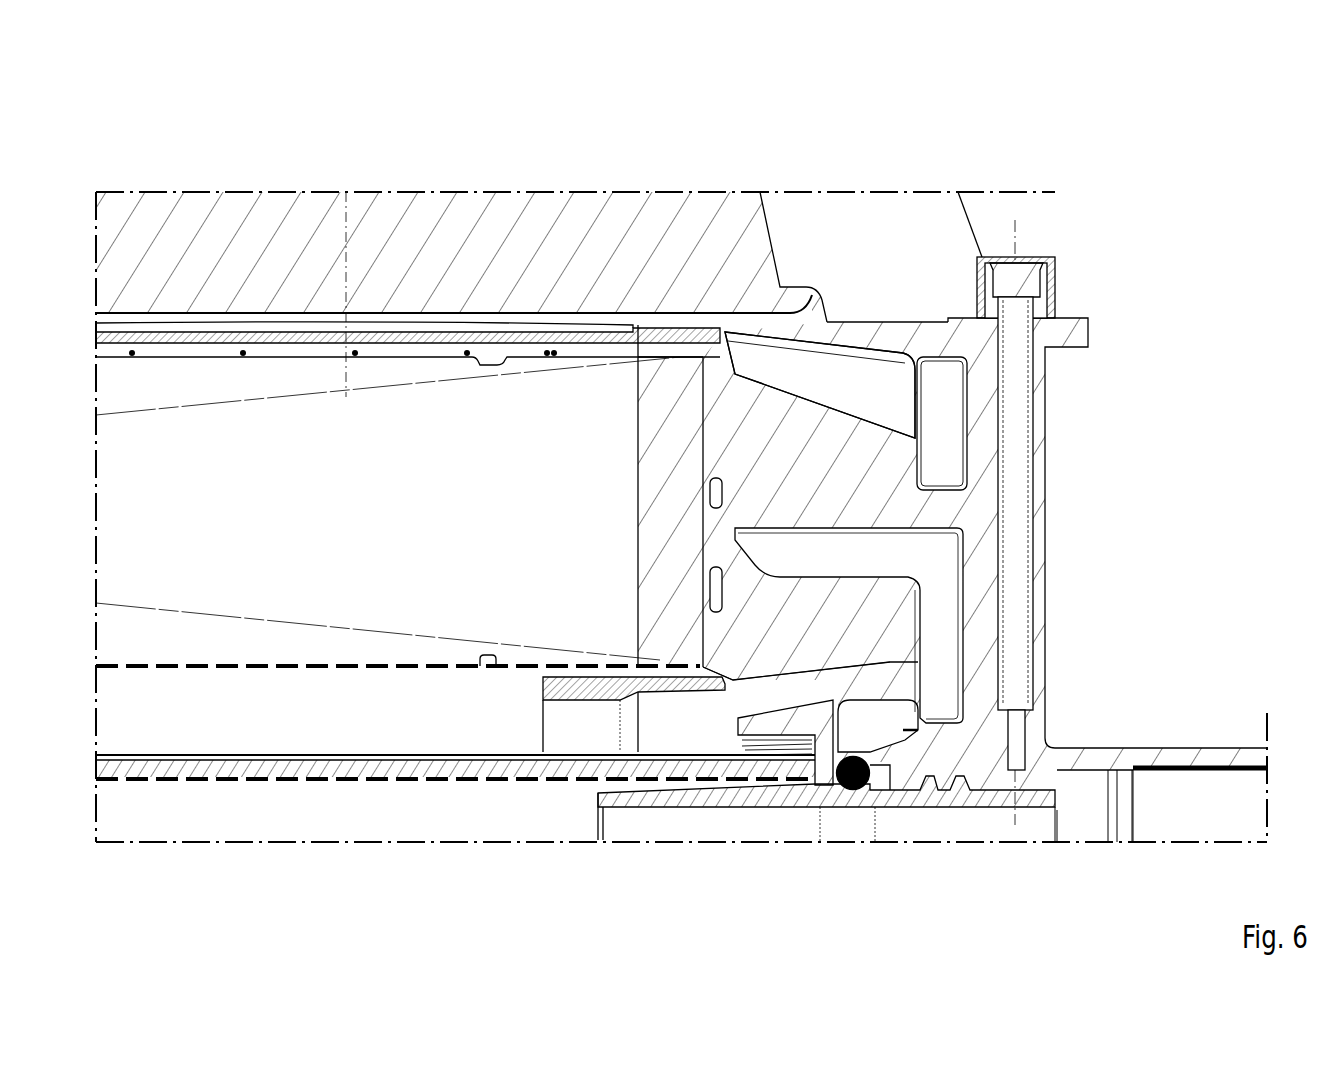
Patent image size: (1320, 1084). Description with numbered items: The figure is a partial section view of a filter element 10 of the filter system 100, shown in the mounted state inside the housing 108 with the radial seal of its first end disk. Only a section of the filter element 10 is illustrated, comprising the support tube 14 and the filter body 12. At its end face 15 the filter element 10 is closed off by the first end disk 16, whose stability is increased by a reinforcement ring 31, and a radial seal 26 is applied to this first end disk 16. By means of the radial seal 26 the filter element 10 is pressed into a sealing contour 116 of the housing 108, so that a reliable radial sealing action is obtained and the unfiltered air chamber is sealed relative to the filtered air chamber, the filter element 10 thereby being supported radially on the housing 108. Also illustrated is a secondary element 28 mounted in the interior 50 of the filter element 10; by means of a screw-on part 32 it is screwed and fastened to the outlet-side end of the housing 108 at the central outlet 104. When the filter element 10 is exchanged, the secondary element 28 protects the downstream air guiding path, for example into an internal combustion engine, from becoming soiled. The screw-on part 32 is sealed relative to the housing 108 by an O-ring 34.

The filter system 100 is at (1222, 200).
The housing 108 is at (417, 230).
The filter element 10 is at (520, 356).
The filter body 12 is at (335, 521).
The support tube 14 is at (437, 660).
The end face 15 is at (920, 458).
The first end disk 16 is at (840, 406).
The radial seal 26 is at (893, 620).
The secondary element 28 is at (372, 770).
The reinforcement ring 31 is at (655, 483).
The screw-on part 32 is at (740, 790).
The O-ring 34 is at (852, 790).
The interior 50 is at (273, 805).
The central outlet 104 is at (1200, 757).
The sealing contour 116 is at (841, 563).